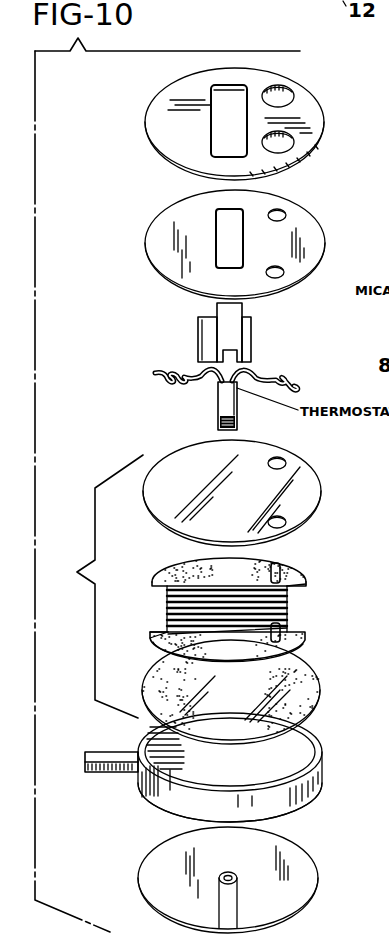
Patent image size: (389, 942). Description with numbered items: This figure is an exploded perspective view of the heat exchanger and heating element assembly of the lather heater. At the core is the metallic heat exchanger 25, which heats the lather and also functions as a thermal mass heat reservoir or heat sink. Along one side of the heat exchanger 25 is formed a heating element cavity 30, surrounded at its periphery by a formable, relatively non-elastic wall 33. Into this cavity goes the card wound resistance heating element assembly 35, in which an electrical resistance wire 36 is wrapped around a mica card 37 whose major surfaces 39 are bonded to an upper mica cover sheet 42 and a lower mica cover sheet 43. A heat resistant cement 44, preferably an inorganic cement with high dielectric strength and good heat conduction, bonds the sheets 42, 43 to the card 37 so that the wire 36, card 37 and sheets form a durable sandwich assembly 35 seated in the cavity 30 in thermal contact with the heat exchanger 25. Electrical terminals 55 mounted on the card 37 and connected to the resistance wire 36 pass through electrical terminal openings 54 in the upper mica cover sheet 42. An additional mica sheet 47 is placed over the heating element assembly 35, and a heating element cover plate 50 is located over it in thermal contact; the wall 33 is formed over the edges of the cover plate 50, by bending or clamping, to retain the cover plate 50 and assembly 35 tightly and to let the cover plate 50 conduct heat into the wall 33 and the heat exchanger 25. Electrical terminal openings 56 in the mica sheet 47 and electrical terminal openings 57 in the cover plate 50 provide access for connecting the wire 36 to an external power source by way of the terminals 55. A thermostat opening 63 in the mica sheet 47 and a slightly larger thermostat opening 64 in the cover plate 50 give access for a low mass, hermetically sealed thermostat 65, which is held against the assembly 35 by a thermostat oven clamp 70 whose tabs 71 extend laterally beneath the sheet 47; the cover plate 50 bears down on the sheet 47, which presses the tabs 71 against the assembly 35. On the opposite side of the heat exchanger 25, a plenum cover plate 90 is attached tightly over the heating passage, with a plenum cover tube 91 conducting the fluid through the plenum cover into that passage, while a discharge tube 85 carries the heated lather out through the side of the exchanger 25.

The heating element cover plate 50 is at (155, 126).
The thermostat opening 64 is at (215, 130).
The electrical terminal openings 57 is at (288, 98).
The mica sheet 47 is at (152, 236).
The thermostat opening 63 is at (218, 258).
The electrical terminal openings 56 is at (283, 217).
The thermostat oven clamp 70 is at (225, 331).
The tabs 71 is at (202, 347).
The thermostat 65 is at (228, 400).
The mica cover sheet 42 is at (177, 458).
The electrical terminal openings 54 is at (283, 466).
The heating element assembly 35 is at (94, 586).
The electrical resistance wire 36 is at (183, 593).
The electrical terminals 55 is at (280, 572).
The major surfaces 39 is at (330, 569).
The mica card 37 is at (302, 640).
The heat resistant cement 44 is at (163, 640).
The mica cover sheet 43 is at (310, 687).
The discharge tube 85 is at (110, 757).
The wall 33 is at (320, 727).
The heating element cavity 30 is at (287, 754).
The heat exchanger 25 is at (185, 805).
The plenum cover plate 90 is at (295, 880).
The plenum cover tube 91 is at (238, 897).